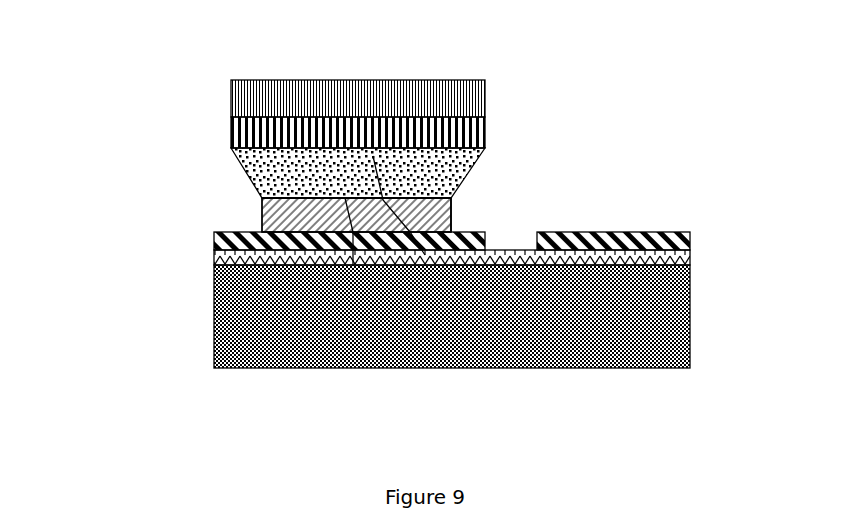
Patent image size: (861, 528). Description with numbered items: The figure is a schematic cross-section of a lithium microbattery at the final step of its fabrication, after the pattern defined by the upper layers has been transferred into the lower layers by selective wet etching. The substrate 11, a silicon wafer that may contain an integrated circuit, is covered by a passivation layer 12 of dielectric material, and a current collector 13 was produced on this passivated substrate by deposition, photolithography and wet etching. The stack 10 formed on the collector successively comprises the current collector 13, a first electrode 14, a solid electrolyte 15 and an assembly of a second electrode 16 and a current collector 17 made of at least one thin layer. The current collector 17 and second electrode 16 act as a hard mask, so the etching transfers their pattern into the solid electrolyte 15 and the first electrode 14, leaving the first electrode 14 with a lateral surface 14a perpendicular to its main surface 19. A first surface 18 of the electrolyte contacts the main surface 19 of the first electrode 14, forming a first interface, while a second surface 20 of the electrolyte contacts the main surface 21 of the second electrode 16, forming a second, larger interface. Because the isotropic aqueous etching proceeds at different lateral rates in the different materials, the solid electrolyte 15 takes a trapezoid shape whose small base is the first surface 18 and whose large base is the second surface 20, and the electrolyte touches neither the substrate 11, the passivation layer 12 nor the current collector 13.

The stack 10 is at (95, 88).
The substrate 11 is at (487, 337).
The passivation layer 12 is at (622, 265).
The current collector 13 is at (697, 230).
The first electrode 14 is at (280, 212).
The lateral surface 14a is at (452, 210).
The solid electrolyte 15 is at (447, 192).
The second electrode 16 is at (373, 156).
The current collector 17 is at (272, 103).
The first surface 18 is at (320, 197).
The main surface 19 is at (353, 265).
The second surface 20 is at (425, 255).
The main surface 21 is at (440, 120).